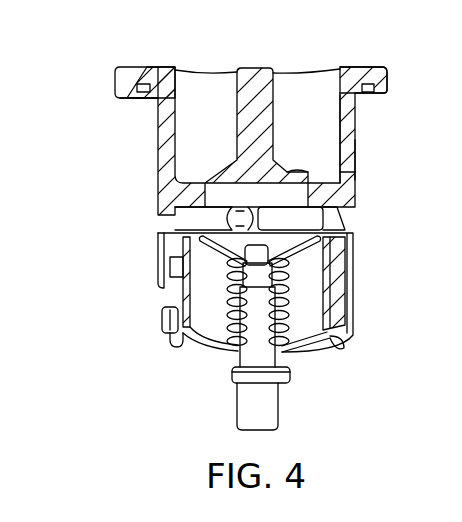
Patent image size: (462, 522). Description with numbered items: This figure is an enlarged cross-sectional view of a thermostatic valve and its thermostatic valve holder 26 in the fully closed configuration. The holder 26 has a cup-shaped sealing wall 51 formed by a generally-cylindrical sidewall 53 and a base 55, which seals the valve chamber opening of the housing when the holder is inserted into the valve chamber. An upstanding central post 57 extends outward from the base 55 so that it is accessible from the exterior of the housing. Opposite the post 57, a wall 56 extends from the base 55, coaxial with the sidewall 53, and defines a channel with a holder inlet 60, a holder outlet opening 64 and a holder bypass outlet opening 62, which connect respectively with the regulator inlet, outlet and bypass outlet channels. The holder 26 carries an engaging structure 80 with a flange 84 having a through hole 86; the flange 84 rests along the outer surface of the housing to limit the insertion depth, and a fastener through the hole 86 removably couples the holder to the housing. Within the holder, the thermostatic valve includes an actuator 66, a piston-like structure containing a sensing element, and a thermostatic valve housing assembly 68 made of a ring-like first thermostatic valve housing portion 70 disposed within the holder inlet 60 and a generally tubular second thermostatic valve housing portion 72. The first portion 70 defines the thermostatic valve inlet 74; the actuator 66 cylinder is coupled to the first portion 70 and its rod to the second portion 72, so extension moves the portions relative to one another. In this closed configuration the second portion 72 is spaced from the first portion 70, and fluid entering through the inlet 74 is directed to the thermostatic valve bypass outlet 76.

The upstanding central post 57 is at (262, 80).
The flange 84 is at (132, 80).
The through hole 86 is at (140, 100).
The engaging structure 80 is at (365, 67).
The generally-cylindrical sidewall 53 is at (353, 99).
The sealing wall 51 is at (344, 137).
The thermostatic valve holder 26 is at (341, 160).
The base 55 is at (350, 174).
The thermostatic valve bypass outlet 76 is at (350, 227).
The holder bypass outlet opening 62 is at (205, 217).
The holder inlet 60 is at (343, 334).
The second thermostatic valve housing portion 72 is at (340, 287).
The thermostatic valve housing assembly 68 is at (340, 313).
The thermostatic valve inlet 74 is at (187, 350).
The holder outlet opening 64 is at (175, 306).
The wall 56 is at (163, 323).
The first thermostatic valve housing portion 70 is at (170, 345).
The actuator 66 is at (270, 405).